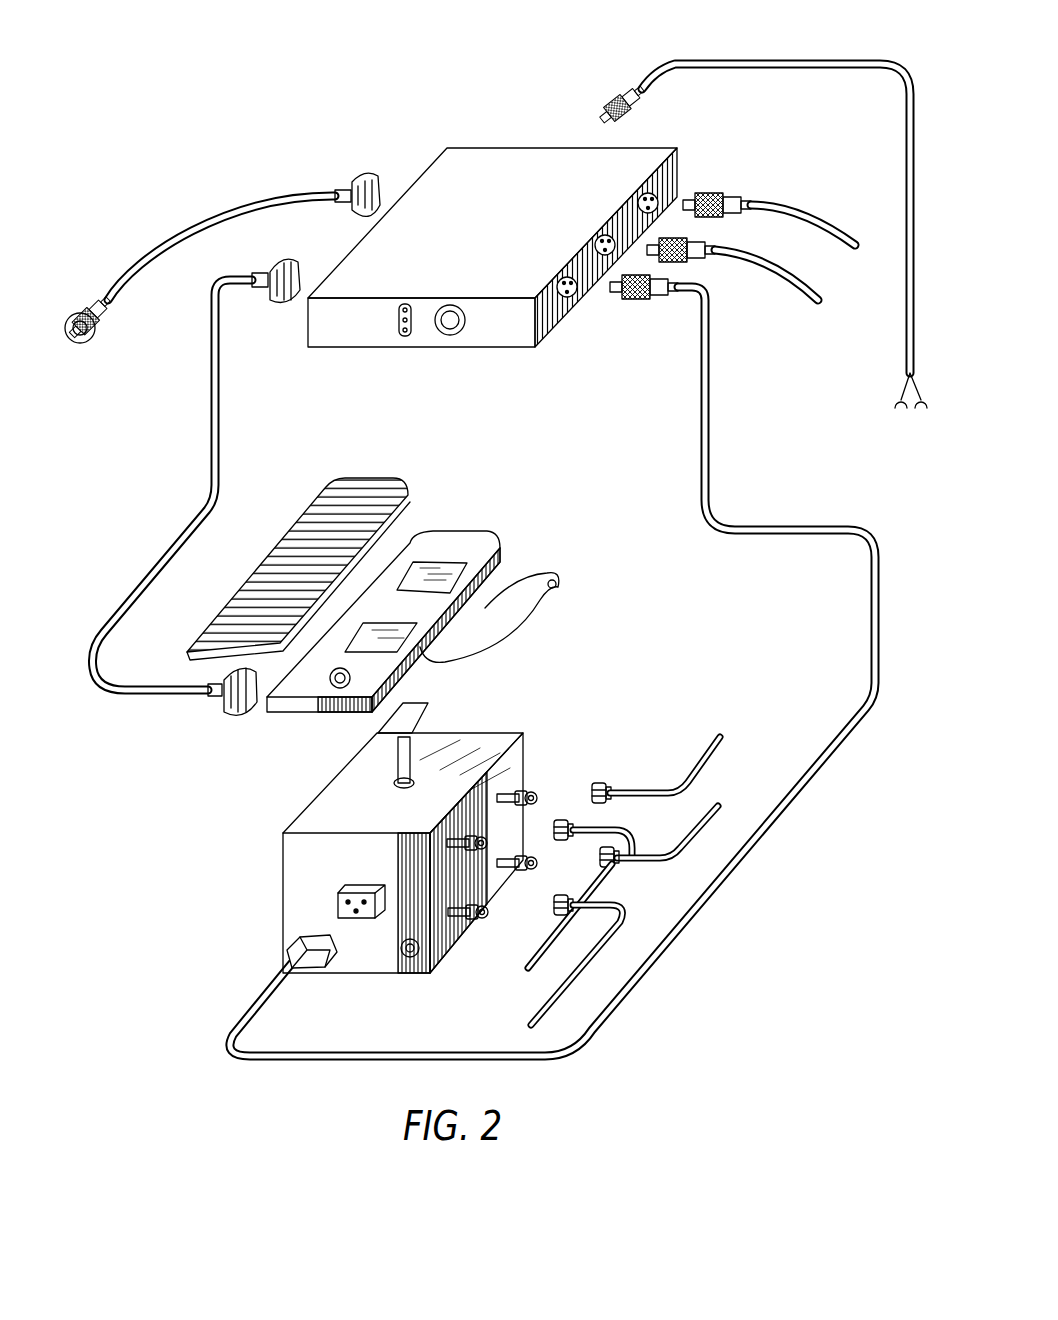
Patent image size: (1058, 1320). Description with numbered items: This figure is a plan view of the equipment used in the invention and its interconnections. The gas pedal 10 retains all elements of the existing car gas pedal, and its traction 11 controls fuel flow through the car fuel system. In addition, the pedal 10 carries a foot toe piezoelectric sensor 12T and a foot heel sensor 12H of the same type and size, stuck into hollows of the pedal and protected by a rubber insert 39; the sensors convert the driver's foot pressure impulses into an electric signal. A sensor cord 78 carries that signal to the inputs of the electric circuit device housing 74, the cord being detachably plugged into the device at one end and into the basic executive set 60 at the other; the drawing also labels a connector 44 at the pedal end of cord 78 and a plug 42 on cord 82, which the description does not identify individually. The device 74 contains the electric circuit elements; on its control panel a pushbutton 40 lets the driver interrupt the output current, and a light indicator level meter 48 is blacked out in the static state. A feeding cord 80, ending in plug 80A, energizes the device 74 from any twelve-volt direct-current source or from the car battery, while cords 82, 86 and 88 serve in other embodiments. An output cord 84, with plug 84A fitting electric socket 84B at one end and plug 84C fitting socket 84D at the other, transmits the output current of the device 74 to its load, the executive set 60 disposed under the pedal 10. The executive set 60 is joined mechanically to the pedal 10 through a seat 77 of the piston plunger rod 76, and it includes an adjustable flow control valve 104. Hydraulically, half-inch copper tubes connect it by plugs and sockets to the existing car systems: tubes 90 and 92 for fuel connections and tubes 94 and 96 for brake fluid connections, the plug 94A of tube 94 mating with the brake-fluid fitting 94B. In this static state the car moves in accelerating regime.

The electric circuit device housing 74 is at (540, 172).
The feeding cord 80 is at (818, 63).
The plug of feeding cord 80A is at (640, 104).
The cord 82 is at (318, 192).
The plug 42 is at (92, 338).
The cord 88 is at (783, 208).
The cord 86 is at (763, 267).
The electric socket 84B is at (567, 298).
The plug of output cord 84A is at (640, 300).
The light indicator level meter 48 is at (399, 336).
The pushbutton 40 is at (450, 330).
The sensor cord 78 is at (212, 462).
The gas pedal 10 is at (690, 466).
The rubber insert 39 is at (310, 548).
The foot toe piezoelectric sensor 12T is at (427, 582).
The traction 11 is at (507, 623).
The foot heel sensor 12H is at (377, 640).
The output cord 84 is at (778, 530).
The pedal connector 44 is at (268, 702).
The seat of piston plunger rod 77 is at (331, 681).
The piston plunger rod 76 is at (392, 757).
The basic executive set 60 is at (553, 718).
The fitting for brake fluid connection 94B is at (573, 768).
The plug of hydraulic tube 94A is at (612, 786).
The hydraulic tube 94 is at (697, 775).
The hydraulic tube 96 is at (700, 838).
The hydraulic tube 90 is at (603, 880).
The hydraulic tube 92 is at (597, 962).
The socket of executive set 84D is at (338, 903).
The plug of output cord 84C is at (290, 955).
The adjustable flow control valve 104 is at (412, 958).